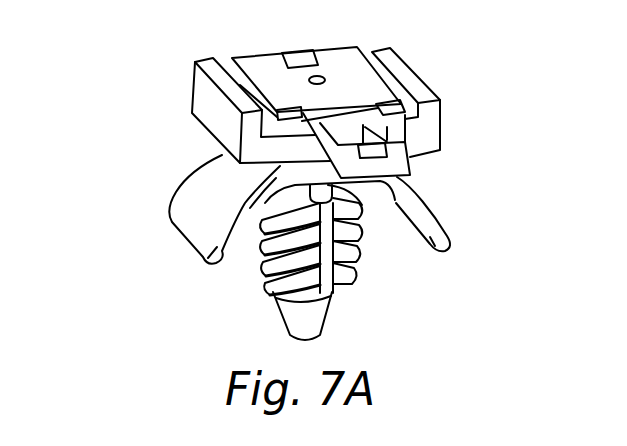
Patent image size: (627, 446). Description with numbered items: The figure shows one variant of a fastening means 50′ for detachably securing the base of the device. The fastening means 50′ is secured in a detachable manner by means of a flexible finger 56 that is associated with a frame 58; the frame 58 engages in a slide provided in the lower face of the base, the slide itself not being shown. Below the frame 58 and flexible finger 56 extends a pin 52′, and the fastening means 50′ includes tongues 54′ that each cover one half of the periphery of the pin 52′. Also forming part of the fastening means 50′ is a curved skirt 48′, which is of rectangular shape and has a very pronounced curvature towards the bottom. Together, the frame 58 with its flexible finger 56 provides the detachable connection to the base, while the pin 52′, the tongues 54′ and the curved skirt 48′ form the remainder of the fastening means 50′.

The curved skirt 48′ is at (198, 193).
The fastening means 50′ is at (462, 268).
The pin 52′ is at (287, 313).
The tongues 54′ is at (256, 271).
The flexible finger 56 is at (406, 163).
The frame 58 is at (420, 77).